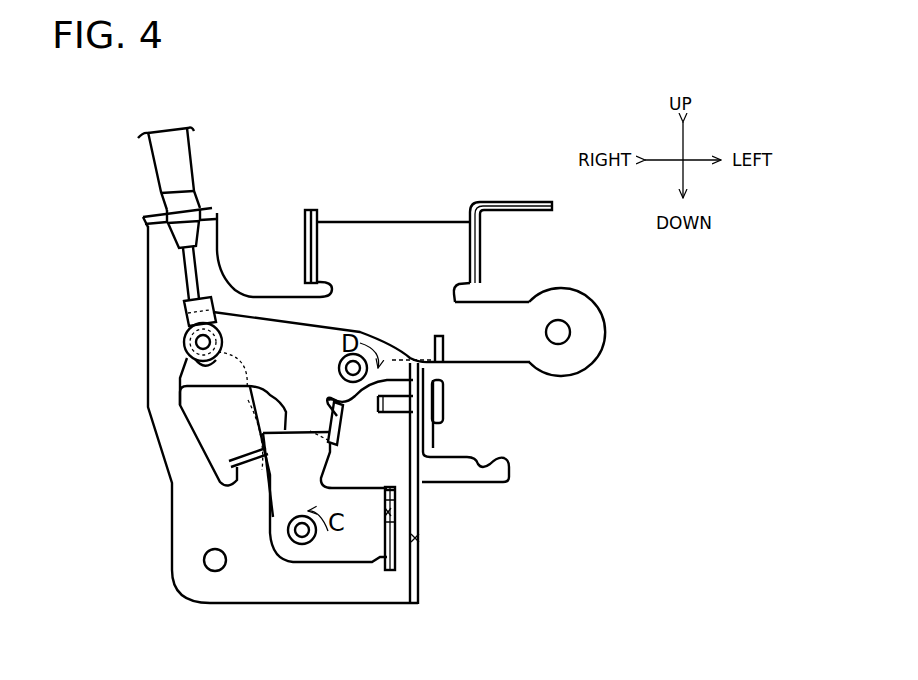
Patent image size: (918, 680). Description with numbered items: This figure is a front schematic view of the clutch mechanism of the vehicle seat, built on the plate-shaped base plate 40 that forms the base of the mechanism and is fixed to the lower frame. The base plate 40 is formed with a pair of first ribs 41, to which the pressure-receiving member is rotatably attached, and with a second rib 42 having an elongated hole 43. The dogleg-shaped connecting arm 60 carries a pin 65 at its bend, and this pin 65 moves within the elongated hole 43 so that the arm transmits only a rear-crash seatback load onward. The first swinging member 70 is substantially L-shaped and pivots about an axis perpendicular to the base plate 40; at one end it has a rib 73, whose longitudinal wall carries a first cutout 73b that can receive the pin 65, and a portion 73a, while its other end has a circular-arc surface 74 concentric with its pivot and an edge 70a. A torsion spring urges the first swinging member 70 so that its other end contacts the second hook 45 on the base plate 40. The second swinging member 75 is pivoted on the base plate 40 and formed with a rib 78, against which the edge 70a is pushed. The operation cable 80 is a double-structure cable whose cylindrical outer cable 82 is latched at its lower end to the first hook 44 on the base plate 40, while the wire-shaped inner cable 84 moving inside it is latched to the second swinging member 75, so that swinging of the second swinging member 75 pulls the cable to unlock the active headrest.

The base plate 40 is at (135, 297).
The first ribs 41 is at (312, 210).
The second rib 42 is at (418, 585).
The elongated hole 43 is at (416, 538).
The first hook 44 is at (150, 221).
The second hook 45 is at (230, 463).
The connecting arm 60 is at (514, 470).
The pin 65 is at (400, 405).
The first swinging member 70 is at (325, 474).
The edge 70a is at (330, 442).
The rib 73 is at (436, 565).
The plate upper portion 73a is at (400, 483).
The first cutout 73b is at (393, 513).
The circular-arc surface 74 is at (277, 482).
The second swinging member 75 is at (243, 394).
The rib 78 is at (328, 403).
The operation cable 80 is at (222, 226).
The outer cable 82 is at (178, 171).
The inner cable 84 is at (218, 264).